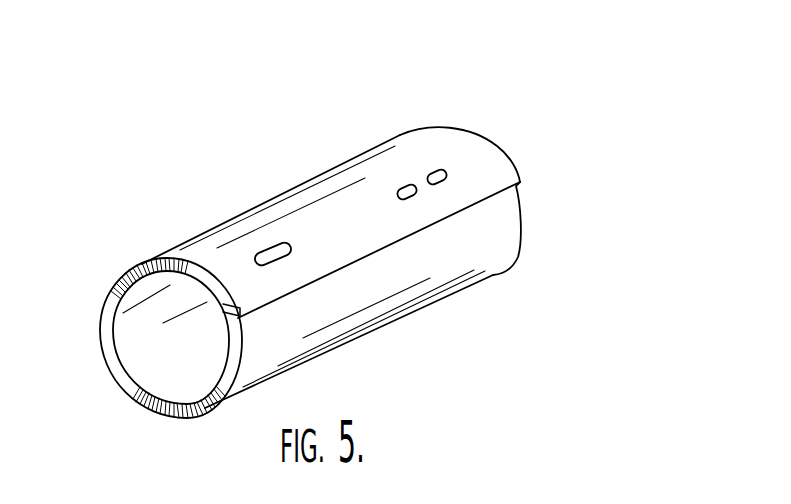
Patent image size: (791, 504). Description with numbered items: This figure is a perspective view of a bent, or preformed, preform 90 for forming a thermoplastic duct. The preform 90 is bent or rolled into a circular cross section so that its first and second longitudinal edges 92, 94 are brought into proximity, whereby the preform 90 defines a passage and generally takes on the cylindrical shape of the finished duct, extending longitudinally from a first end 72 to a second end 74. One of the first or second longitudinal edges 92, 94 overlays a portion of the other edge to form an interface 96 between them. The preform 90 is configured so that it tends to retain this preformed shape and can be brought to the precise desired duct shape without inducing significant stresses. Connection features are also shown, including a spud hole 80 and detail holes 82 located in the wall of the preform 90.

The preform 90 is at (147, 156).
The first end 72 is at (101, 330).
The second end 74 is at (490, 137).
The spud hole 80 is at (265, 250).
The detail holes 82 is at (443, 170).
The first longitudinal edge 92 is at (424, 228).
The second longitudinal edge 94 is at (217, 313).
The interface 96 is at (241, 315).